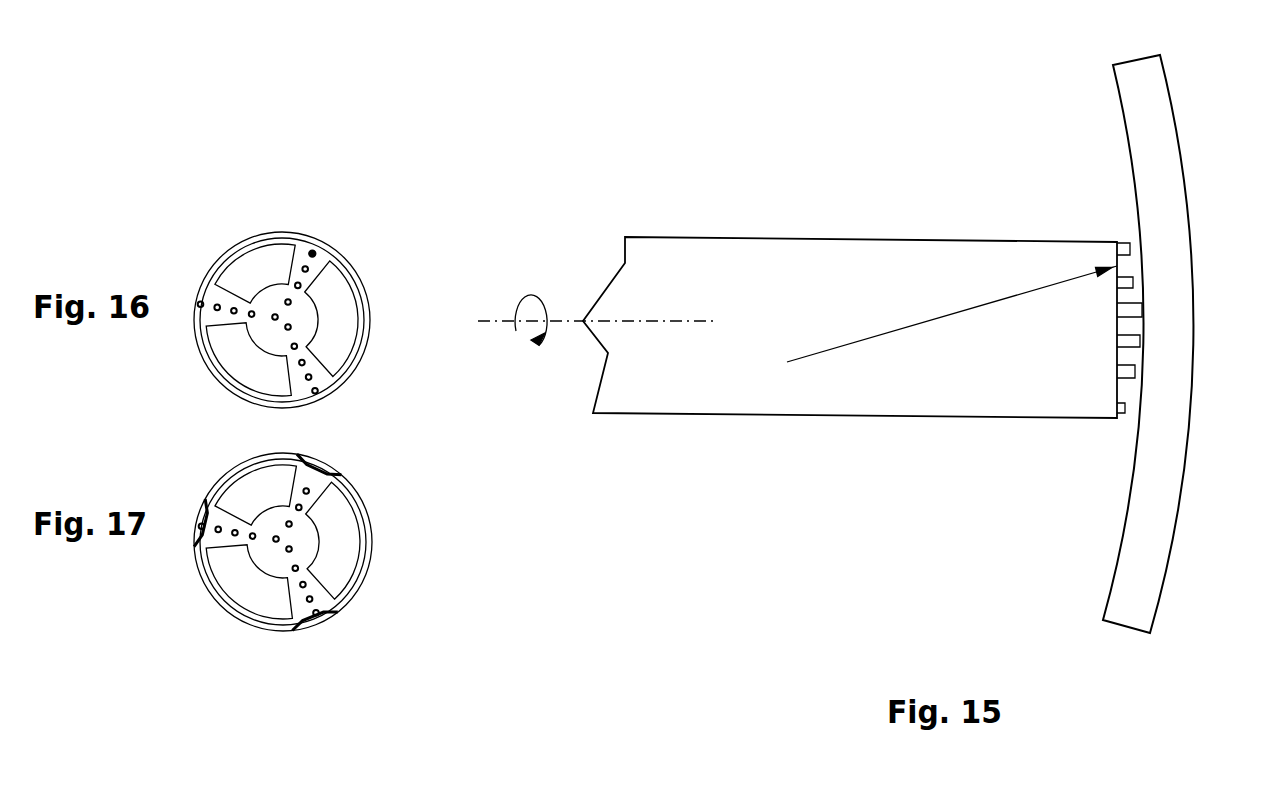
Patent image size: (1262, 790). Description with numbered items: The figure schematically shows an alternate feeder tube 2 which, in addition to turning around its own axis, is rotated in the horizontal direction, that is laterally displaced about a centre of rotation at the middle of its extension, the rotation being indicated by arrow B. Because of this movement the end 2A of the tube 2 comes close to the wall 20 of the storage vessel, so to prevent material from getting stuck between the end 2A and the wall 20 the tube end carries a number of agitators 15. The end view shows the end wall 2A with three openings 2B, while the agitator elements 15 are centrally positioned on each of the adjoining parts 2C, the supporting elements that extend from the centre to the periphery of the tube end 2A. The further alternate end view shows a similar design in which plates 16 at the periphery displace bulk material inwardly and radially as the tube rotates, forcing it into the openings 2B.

In FIG. 16, the tube 2 is at (363, 280).
In FIG. 15, the tube 2 is at (745, 265).
In FIG. 16, the end of the tube 2A is at (303, 320).
In FIG. 17, the end of the tube 2A is at (305, 542).
In FIG. 15, the end of the tube 2A is at (1123, 389).
In FIG. 16, the openings 2B is at (258, 273).
In FIG. 16, the adjoining parts 2C is at (310, 370).
In FIG. 16, the agitators 15 is at (311, 250).
In FIG. 15, the agitators 15 is at (1127, 242).
In FIG. 17, the notch 16 is at (323, 627).
In FIG. 15, the wall 20 is at (1177, 260).
In FIG. 15, the direction of rotation arrow B is at (873, 228).